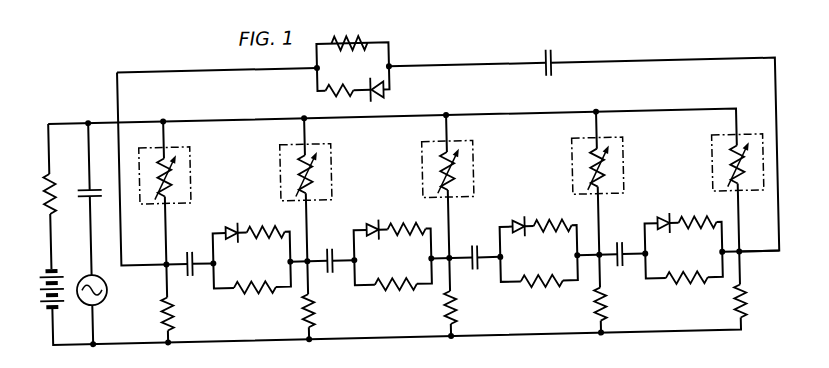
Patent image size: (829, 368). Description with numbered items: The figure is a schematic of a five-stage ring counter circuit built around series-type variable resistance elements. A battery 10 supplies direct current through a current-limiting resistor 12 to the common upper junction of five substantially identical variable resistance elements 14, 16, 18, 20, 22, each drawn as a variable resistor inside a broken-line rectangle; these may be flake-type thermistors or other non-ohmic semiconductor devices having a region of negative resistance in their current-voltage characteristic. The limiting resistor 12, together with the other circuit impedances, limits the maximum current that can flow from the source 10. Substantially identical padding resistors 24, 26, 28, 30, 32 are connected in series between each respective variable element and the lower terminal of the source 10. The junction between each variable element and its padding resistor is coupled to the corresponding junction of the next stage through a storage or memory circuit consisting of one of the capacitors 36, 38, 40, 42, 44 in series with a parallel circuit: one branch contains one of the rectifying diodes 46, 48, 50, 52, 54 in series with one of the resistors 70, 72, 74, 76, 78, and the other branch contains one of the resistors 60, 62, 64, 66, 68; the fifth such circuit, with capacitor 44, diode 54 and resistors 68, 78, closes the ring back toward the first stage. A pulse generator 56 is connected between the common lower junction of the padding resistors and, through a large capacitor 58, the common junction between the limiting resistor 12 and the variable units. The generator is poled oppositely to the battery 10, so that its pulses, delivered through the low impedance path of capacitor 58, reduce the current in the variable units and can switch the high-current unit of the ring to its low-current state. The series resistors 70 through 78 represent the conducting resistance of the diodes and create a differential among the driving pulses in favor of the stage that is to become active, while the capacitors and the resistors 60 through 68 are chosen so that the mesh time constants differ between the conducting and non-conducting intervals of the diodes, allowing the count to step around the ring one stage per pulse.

The battery 10 is at (38, 281).
The current-limiting resistor 12 is at (41, 187).
The variable resistance element 14 is at (192, 189).
The variable resistance element 16 is at (335, 192).
The variable resistance element 18 is at (475, 191).
The variable resistance element 20 is at (625, 189).
The variable resistance element 22 is at (712, 184).
The padding resistor 24 is at (176, 297).
The padding resistor 26 is at (318, 301).
The padding resistor 28 is at (462, 302).
The padding resistor 30 is at (610, 303).
The padding resistor 32 is at (750, 306).
The capacitor 36 is at (187, 238).
The capacitor 38 is at (330, 238).
The capacitor 40 is at (475, 244).
The capacitor 42 is at (619, 247).
The capacitor 44 is at (551, 47).
The rectifying diode 46 is at (236, 215).
The rectifying diode 48 is at (373, 216).
The rectifying diode 50 is at (522, 217).
The rectifying diode 52 is at (665, 217).
The rectifying diode 54 is at (382, 93).
The pulse generator 56 is at (101, 292).
The capacitor 58 is at (100, 182).
The resistor 60 is at (254, 293).
The resistor 62 is at (393, 295).
The resistor 64 is at (540, 298).
The resistor 66 is at (686, 297).
The resistor 68 is at (362, 30).
The resistor 70 is at (269, 219).
The resistor 72 is at (407, 218).
The resistor 74 is at (556, 219).
The resistor 76 is at (702, 219).
The resistor 78 is at (340, 96).